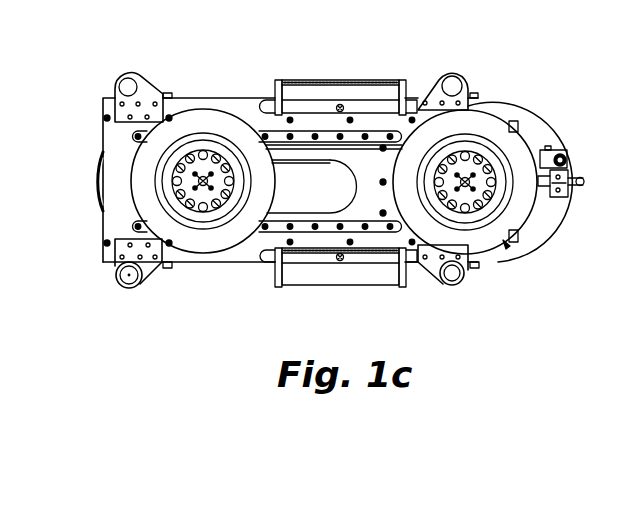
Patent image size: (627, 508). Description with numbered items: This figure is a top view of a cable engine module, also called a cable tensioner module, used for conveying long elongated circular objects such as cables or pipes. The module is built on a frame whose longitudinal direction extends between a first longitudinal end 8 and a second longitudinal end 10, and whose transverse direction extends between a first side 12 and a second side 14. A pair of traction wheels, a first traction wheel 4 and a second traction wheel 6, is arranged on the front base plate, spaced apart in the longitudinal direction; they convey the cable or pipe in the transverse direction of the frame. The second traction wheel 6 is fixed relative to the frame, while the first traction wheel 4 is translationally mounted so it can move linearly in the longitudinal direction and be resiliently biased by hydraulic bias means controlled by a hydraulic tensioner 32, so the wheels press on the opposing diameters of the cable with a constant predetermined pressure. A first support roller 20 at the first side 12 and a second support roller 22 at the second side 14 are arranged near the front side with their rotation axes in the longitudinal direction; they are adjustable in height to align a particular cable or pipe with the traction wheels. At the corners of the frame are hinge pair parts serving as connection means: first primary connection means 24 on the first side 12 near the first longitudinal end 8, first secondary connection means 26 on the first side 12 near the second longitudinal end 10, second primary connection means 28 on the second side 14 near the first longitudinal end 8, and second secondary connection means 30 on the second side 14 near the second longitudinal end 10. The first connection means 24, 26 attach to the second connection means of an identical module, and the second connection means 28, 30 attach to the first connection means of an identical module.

The first traction wheel 4 is at (204, 121).
The second traction wheel 6 is at (478, 122).
The first longitudinal end 8 is at (100, 138).
The second longitudinal end 10 is at (572, 173).
The first side 12 is at (242, 98).
The second side 14 is at (227, 263).
The first support roller 20 is at (337, 88).
The second support roller 22 is at (368, 275).
The first primary connection means 24 is at (144, 88).
The first secondary connection means 26 is at (435, 86).
The second primary connection means 28 is at (115, 285).
The second secondary connection means 30 is at (458, 287).
The hydraulic tensioner 32 is at (567, 200).